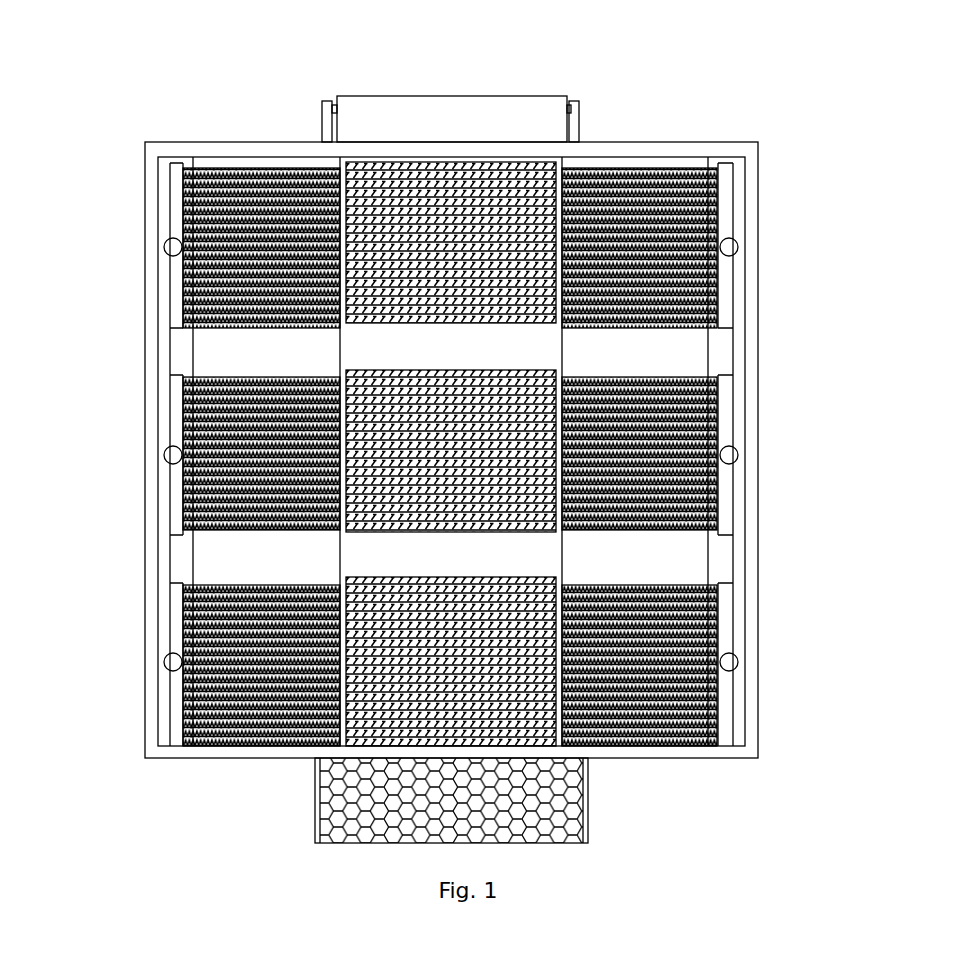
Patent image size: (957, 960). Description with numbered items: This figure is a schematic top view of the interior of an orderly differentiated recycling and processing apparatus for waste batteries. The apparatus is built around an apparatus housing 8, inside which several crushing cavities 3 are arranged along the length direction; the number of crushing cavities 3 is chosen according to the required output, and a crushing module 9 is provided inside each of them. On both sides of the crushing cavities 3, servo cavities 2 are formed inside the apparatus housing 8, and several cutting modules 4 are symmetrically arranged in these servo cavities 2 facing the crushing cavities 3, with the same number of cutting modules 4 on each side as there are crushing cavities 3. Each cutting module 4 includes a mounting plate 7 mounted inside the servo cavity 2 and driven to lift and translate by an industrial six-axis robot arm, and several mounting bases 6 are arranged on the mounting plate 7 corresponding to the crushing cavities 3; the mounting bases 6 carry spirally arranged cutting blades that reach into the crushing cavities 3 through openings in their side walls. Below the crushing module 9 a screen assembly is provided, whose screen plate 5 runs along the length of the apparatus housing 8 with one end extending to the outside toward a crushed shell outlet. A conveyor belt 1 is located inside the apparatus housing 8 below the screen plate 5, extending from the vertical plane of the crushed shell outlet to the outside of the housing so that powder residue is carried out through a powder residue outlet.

The conveyor belt 1 is at (442, 115).
The servo cavity 2 is at (648, 352).
The crushing cavity 3 is at (548, 575).
The cutting module 4 is at (705, 640).
The screen plate 5 is at (352, 827).
The mounting base 6 is at (178, 515).
The mounting plate 7 is at (178, 355).
The apparatus housing 8 is at (155, 243).
The crushing module 9 is at (250, 170).